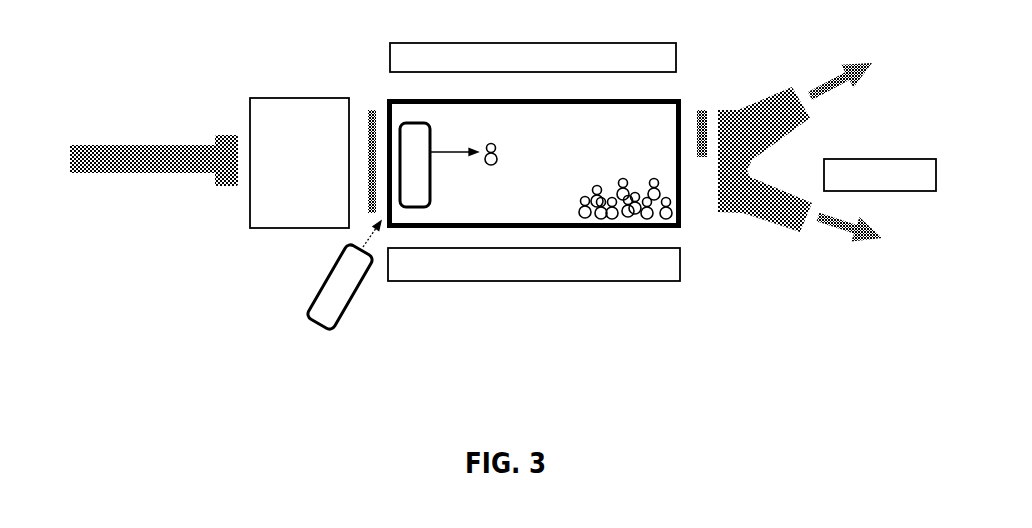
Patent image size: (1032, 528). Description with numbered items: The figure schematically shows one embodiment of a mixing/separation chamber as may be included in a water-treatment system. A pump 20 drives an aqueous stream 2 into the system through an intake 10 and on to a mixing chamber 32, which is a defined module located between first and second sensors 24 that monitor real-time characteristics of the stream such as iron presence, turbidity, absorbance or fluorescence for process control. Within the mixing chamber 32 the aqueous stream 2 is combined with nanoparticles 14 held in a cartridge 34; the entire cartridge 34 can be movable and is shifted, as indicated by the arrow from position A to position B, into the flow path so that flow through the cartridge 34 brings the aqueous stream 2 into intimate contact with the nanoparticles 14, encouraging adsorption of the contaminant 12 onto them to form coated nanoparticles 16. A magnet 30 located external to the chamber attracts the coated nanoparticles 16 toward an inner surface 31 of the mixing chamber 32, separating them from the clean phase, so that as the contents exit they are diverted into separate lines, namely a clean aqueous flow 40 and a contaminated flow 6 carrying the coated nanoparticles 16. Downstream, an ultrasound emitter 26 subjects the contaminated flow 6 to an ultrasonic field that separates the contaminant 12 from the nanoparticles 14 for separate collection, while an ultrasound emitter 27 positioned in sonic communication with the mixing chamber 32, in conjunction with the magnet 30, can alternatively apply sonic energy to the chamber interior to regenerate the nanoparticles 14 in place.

The aqueous stream 2 is at (17, 160).
The intake 10 is at (158, 143).
The pump 20 is at (277, 96).
The sensors 24 is at (364, 96).
The ultrasound emitter 27 is at (486, 40).
The mixing chamber 32 is at (588, 168).
The inner surface 31 is at (562, 223).
The magnet 30 is at (658, 268).
The nanoparticles 14 is at (413, 148).
The cartridge 34 is at (430, 163).
The coated nanoparticles 16 is at (495, 144).
The clean aqueous flow 40 is at (807, 138).
The ultrasound emitter 26 is at (880, 159).
The contaminated flow 6 is at (858, 230).
The contaminant 12 is at (864, 249).